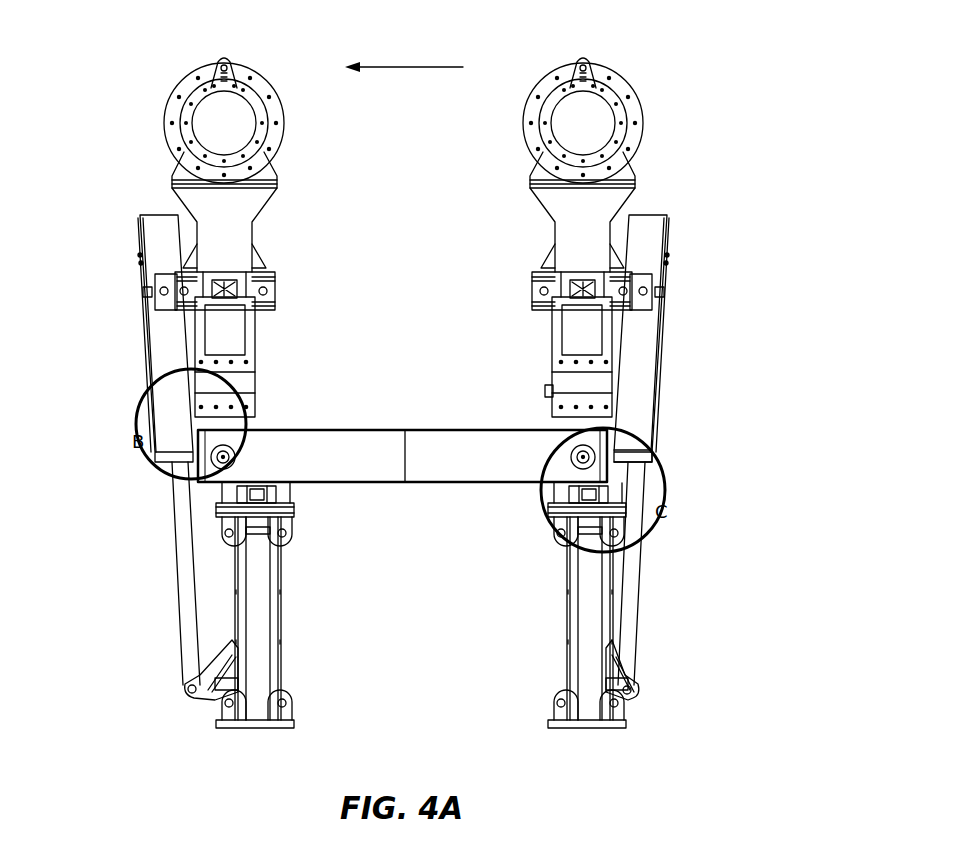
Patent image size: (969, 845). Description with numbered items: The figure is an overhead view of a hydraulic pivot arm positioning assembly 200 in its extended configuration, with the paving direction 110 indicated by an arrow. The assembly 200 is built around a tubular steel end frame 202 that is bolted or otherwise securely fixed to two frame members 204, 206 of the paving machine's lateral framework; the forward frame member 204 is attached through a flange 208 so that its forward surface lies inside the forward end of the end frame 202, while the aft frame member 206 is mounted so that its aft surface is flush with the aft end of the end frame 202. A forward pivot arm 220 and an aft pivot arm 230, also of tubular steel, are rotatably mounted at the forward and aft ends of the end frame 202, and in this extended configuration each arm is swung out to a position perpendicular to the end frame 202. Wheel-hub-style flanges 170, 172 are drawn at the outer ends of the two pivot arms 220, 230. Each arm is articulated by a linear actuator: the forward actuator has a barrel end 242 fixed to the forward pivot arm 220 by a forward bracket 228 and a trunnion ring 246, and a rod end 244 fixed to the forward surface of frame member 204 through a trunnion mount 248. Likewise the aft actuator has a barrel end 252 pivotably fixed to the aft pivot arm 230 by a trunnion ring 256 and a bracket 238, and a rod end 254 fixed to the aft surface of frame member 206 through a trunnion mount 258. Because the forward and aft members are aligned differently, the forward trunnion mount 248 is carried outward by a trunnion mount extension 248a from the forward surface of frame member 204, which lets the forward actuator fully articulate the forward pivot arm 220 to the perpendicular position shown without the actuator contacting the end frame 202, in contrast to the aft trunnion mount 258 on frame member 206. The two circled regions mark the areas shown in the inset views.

The hydraulic pivot arm positioning assembly 200 is at (750, 75).
The paving direction 110 is at (400, 68).
The first wheel hub flange 170 is at (170, 108).
The second wheel hub flange 172 is at (622, 88).
The barrel end 242 is at (168, 235).
The barrel end 252 is at (640, 235).
The trunnion ring 246 is at (144, 293).
The trunnion ring 256 is at (662, 292).
The forward bracket 228 is at (280, 292).
The forward bracket 238 is at (530, 290).
The forward pivot arm 220 is at (258, 330).
The aft pivot arm 230 is at (552, 330).
The end frame 202 is at (350, 428).
The flange 208 is at (297, 495).
The frame member 204 is at (280, 612).
The frame member 206 is at (572, 625).
The rod end 244 is at (180, 576).
The rod end 254 is at (630, 625).
The trunnion mount 248 is at (186, 688).
The trunnion mount extension 248a is at (215, 695).
The trunnion mount 258 is at (623, 686).